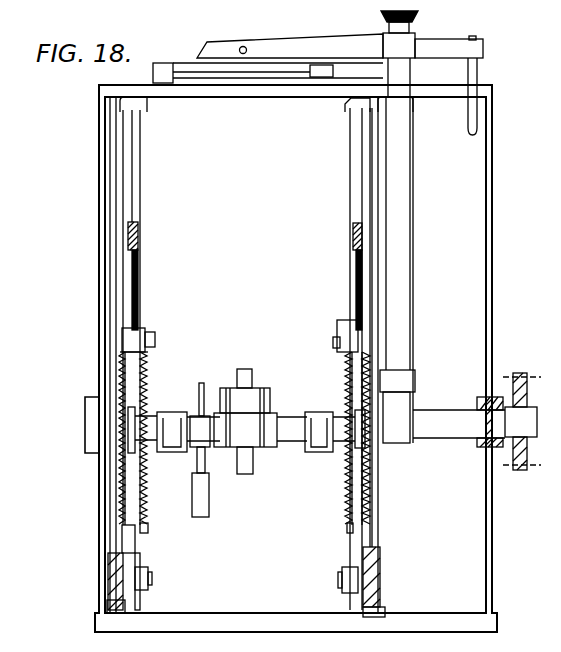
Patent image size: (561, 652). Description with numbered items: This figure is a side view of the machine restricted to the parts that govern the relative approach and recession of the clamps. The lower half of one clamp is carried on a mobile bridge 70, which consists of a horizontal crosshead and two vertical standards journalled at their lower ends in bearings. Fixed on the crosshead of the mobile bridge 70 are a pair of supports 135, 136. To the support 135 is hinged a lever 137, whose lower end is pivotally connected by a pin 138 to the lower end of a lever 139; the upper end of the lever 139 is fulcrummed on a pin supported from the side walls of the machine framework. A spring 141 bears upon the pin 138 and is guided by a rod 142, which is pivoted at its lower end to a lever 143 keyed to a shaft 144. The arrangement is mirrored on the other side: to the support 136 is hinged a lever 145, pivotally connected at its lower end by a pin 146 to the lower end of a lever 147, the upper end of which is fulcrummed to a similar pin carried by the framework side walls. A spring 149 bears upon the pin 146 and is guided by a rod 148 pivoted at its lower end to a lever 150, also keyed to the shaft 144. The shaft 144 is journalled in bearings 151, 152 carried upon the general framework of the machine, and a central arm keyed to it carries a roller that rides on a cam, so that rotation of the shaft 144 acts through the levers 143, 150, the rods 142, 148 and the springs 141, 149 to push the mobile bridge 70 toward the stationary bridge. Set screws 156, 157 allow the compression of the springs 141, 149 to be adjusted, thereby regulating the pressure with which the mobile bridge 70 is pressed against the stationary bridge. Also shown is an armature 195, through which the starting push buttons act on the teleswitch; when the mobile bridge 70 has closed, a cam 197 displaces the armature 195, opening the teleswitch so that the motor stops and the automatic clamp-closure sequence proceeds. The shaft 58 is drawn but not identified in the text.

The drive shaft 58 is at (287, 413).
The mobile bridge 70 is at (233, 90).
The support 135 is at (150, 107).
The support 136 is at (353, 101).
The lever 137 is at (132, 182).
The pin 138 is at (155, 342).
The lever 139 is at (135, 272).
The spring 141 is at (143, 385).
The rod 142 is at (133, 367).
The lever 143 is at (140, 555).
The shaft 144 is at (292, 432).
The lever 145 is at (358, 182).
The pin 146 is at (336, 343).
The lever 147 is at (358, 275).
The rod 148 is at (358, 365).
The spring 149 is at (370, 488).
The lever 150 is at (347, 528).
The bearing 151 is at (170, 452).
The bearing 152 is at (323, 450).
The set screw 156 is at (148, 528).
The set screw 157 is at (348, 536).
The armature 195 is at (224, 482).
The cam 197 is at (201, 382).